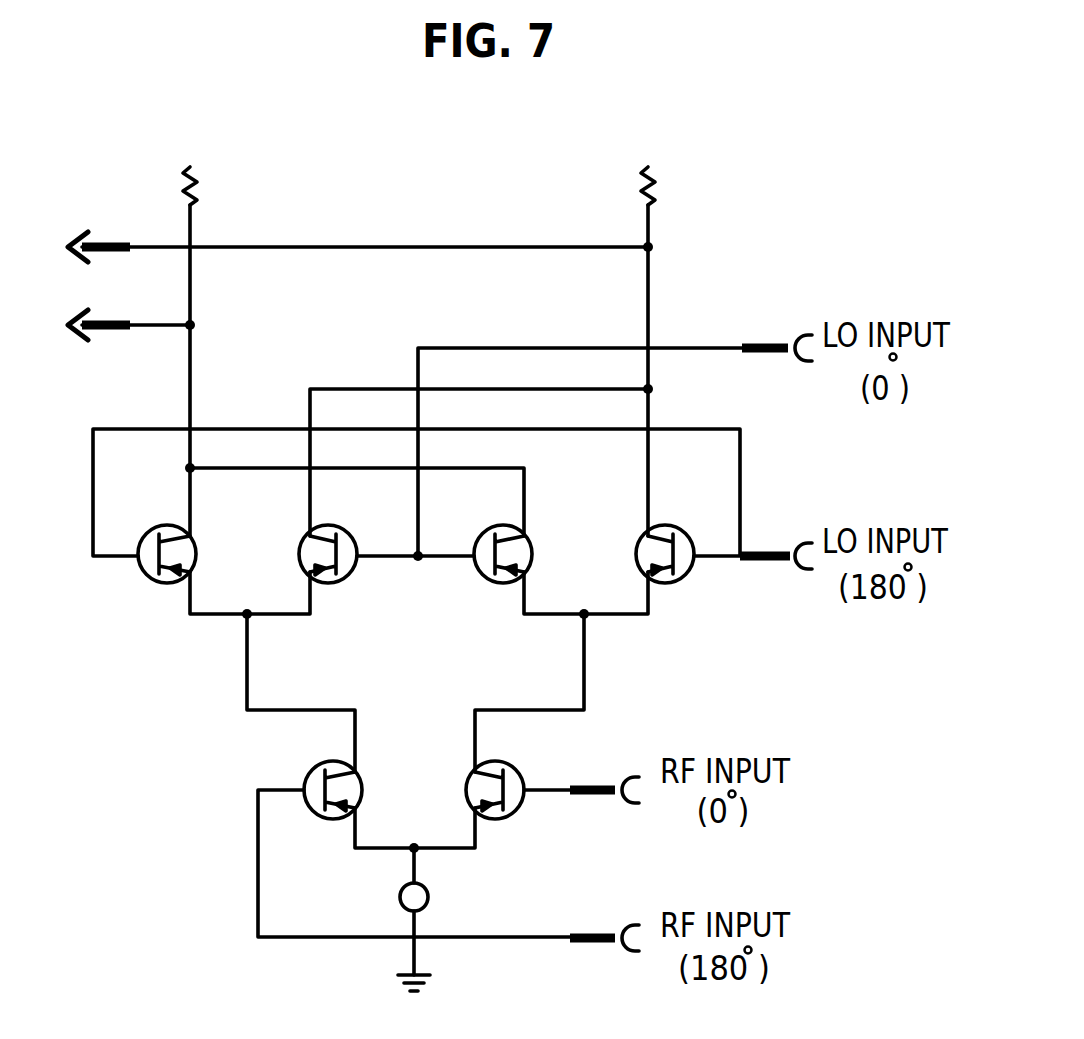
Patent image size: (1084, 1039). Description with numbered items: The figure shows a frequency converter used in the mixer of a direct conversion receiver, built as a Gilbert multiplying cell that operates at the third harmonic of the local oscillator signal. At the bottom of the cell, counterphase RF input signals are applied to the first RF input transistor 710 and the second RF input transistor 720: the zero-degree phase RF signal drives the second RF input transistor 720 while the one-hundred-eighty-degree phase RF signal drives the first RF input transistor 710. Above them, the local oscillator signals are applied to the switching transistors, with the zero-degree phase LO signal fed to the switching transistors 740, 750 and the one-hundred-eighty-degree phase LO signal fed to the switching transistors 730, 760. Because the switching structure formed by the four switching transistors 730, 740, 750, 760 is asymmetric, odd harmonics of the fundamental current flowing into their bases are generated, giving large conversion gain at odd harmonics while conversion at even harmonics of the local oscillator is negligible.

The transistor V1 710 is at (321, 827).
The transistor V2 720 is at (507, 827).
The transistor V3 730 is at (155, 591).
The transistor V4 740 is at (339, 591).
The transistor V5 750 is at (491, 591).
The transistor V6 760 is at (677, 591).